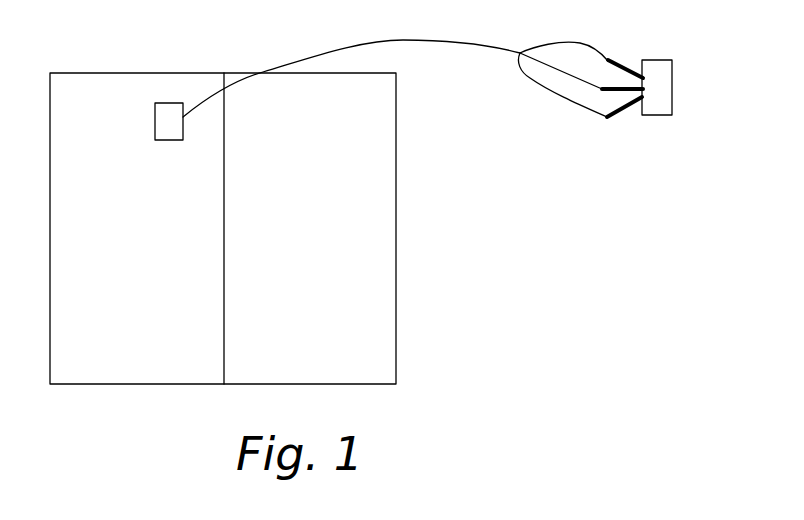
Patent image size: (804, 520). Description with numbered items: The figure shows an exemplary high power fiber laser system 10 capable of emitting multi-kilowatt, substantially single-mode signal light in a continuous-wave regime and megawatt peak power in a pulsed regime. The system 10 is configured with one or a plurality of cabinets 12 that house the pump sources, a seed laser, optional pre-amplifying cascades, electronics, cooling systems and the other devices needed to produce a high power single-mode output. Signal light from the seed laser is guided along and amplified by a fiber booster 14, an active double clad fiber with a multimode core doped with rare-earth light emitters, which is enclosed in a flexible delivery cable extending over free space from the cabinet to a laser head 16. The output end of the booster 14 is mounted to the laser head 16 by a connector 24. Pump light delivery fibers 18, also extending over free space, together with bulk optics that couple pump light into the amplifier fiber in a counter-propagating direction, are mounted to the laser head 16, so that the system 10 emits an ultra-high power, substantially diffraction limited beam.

The high power fiber laser system 10 is at (422, 138).
The cabinet 12 is at (104, 336).
The fiber booster 14 is at (560, 68).
The laser head 16 is at (657, 87).
The pump light delivery fiber 18 is at (603, 58).
The connector 24 is at (632, 93).